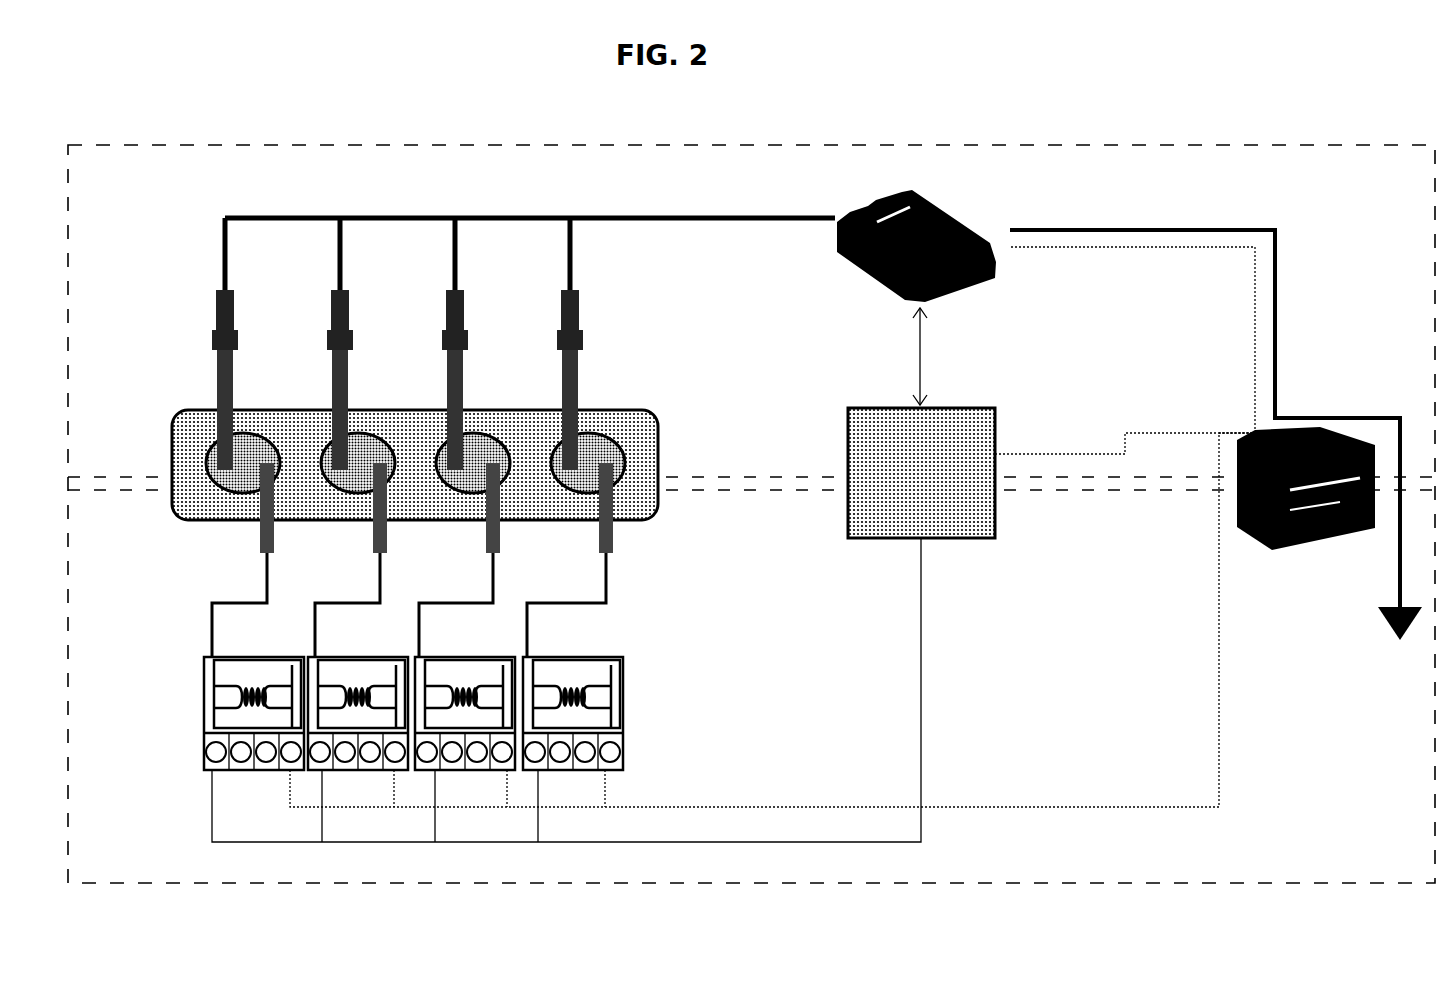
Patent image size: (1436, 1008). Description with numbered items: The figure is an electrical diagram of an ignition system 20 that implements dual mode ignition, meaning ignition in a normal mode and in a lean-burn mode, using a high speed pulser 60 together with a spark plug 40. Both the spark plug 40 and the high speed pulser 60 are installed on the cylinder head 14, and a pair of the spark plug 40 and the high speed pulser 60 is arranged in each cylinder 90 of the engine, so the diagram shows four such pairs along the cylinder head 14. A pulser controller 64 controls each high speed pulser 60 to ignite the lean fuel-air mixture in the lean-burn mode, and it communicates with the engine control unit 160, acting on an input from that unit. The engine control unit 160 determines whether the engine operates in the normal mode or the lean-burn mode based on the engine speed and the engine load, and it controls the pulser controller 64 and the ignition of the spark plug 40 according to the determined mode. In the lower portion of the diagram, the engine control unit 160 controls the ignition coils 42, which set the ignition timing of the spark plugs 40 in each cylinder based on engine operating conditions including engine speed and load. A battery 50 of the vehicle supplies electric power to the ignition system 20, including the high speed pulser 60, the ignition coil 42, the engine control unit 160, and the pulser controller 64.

The ignition system 20 is at (752, 492).
The cylinder head 14 is at (660, 448).
The cylinder 90 is at (215, 465).
The high speed pulser 60 is at (237, 368).
The spark plug 40 is at (260, 532).
The ignition coil 42 is at (625, 702).
The pulser controller 64 is at (1119, 400).
The engine control unit 160 is at (921, 473).
The battery 50 is at (1345, 535).